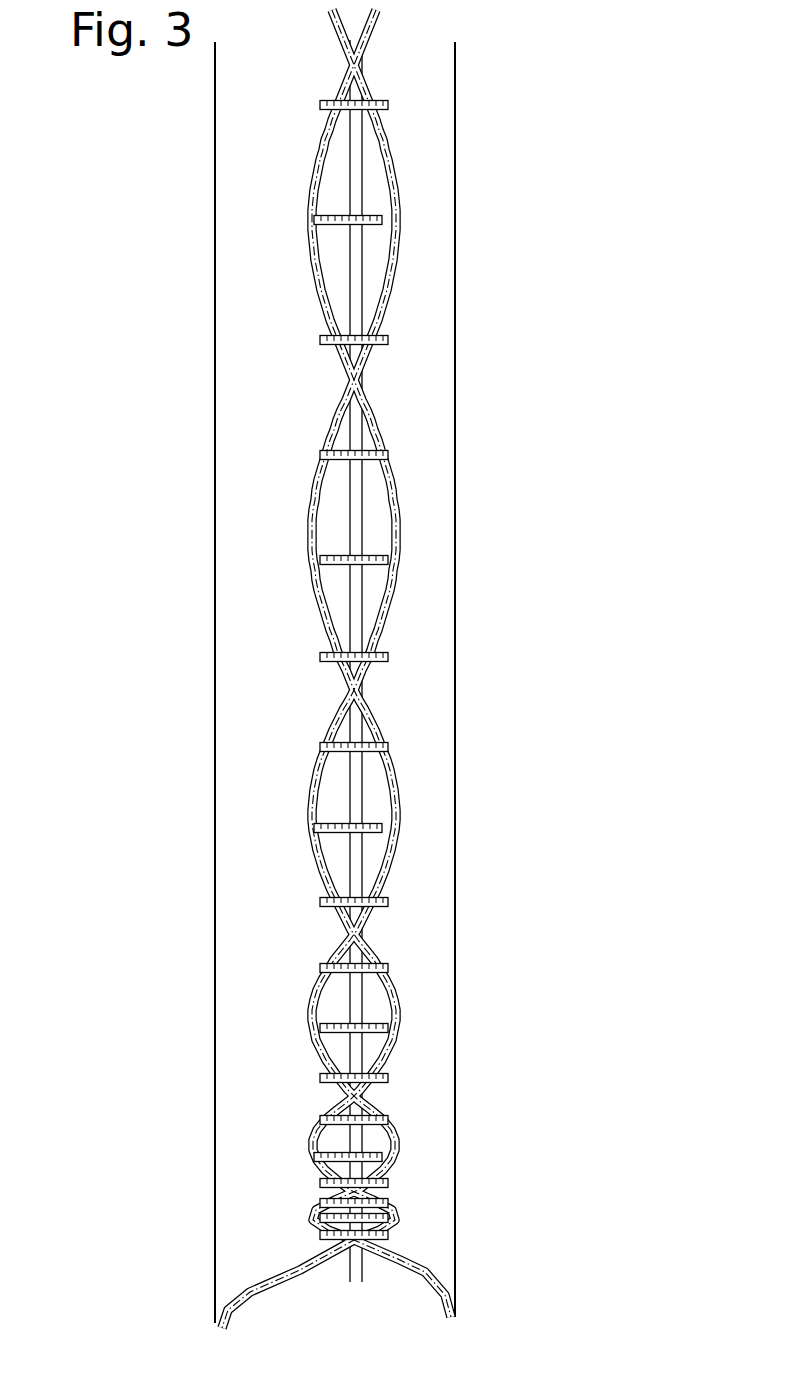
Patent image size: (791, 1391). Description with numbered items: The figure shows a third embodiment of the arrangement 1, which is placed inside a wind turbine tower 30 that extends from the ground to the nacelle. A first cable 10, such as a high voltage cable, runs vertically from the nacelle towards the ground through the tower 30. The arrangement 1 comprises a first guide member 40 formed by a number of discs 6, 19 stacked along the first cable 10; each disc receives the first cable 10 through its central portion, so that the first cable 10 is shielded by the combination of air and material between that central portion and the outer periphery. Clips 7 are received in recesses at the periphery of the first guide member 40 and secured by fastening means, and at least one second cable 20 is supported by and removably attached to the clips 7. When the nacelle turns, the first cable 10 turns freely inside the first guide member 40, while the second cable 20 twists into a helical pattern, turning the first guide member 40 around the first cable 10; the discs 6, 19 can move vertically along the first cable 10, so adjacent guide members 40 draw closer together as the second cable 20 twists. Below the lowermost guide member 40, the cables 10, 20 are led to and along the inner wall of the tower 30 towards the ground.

The arrangement 1 is at (263, 437).
The disc 6 is at (500, 416).
The cross bar / rung 19 is at (388, 441).
The clip 7 is at (388, 557).
The first cable 10 is at (357, 283).
The second cable 20 is at (315, 253).
The wind turbine tower 30 is at (215, 890).
The first guide member 40 is at (392, 728).